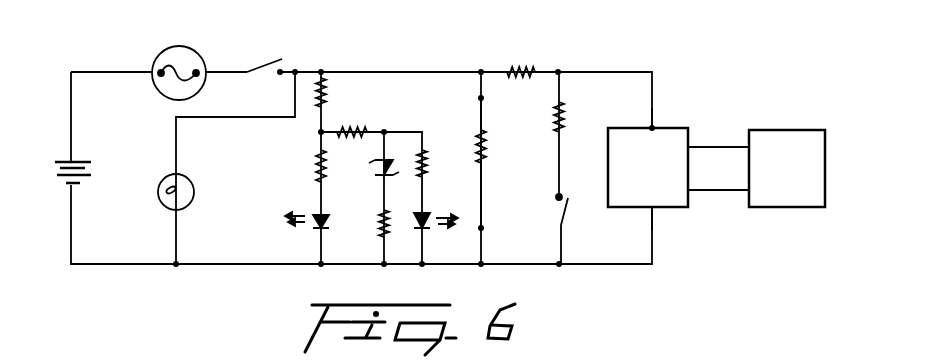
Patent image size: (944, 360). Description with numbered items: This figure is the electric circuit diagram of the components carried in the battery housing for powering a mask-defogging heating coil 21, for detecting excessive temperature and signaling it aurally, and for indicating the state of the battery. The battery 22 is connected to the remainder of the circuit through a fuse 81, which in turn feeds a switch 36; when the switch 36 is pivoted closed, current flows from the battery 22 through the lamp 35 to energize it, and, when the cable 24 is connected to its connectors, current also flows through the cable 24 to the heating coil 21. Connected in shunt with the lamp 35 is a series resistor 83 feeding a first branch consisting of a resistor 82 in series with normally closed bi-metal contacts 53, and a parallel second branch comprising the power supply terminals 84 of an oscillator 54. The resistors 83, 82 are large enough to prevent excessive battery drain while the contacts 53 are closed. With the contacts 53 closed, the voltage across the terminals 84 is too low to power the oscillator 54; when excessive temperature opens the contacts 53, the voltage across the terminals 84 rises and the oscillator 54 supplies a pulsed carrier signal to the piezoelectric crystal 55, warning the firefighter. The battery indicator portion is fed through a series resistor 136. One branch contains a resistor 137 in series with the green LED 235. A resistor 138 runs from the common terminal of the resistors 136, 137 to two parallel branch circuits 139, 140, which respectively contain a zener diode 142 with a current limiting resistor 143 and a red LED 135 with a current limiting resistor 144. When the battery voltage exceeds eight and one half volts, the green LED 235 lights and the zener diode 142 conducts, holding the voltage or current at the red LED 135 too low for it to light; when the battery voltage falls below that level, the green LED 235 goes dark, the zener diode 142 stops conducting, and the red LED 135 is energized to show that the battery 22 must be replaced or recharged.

The battery 22 is at (53, 172).
The fuse 81 is at (172, 52).
The switch 36 is at (264, 62).
The lamp 35 is at (163, 198).
The series resistor 136 is at (327, 100).
The resistor 137 is at (312, 167).
The resistor 138 is at (354, 130).
The zener diode 142 is at (372, 165).
The current limiting resistor 144 is at (430, 165).
The current limiting resistor 143 is at (378, 236).
The parallel branch circuit 139 is at (392, 237).
The green light emitting diode 235 is at (313, 232).
The parallel branch circuit 140 is at (432, 206).
The red light emitting diode 135 is at (425, 232).
The heating coil 21 is at (486, 148).
The cable 24 is at (483, 228).
The series resistor 83 is at (518, 69).
The resistor 82 is at (565, 115).
The bi-metal contacts 53 is at (569, 213).
The oscillator 54 is at (682, 140).
The power supply terminals 84 is at (654, 210).
The piezoelectric crystal 55 is at (798, 142).